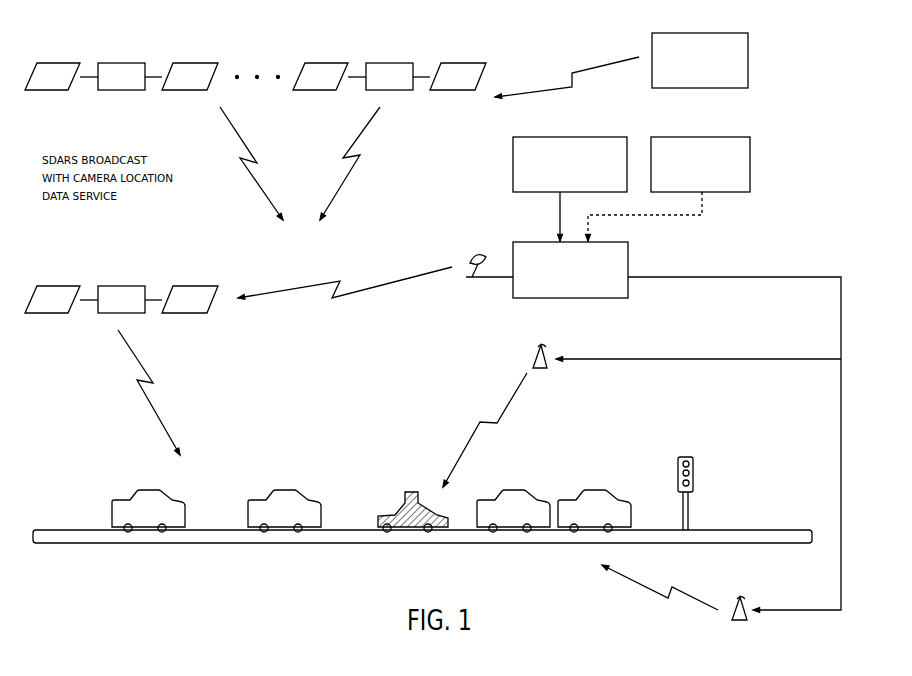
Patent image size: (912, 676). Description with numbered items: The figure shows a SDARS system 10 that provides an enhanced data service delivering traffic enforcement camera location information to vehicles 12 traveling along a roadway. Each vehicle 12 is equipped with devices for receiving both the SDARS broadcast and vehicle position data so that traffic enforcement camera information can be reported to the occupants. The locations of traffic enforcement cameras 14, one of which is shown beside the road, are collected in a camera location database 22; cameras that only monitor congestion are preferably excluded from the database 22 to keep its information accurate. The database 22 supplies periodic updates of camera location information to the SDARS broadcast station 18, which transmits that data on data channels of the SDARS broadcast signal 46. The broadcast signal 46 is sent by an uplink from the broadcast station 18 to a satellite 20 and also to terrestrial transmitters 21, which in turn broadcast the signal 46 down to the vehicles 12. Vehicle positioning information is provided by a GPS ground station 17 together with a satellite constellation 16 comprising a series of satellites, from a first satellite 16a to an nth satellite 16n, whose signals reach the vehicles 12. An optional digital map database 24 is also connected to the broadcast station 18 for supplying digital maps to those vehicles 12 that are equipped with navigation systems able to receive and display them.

The SDARS system 10 is at (123, 568).
The vehicle 12 is at (284, 502).
The traffic enforcement camera 14 is at (694, 472).
The satellite constellation 16 is at (322, 45).
The satellite 16a is at (185, 90).
The satellite 16n is at (393, 91).
The GPS ground station 17 is at (749, 59).
The SDARS broadcast station 18 is at (628, 262).
The satellite 20 is at (122, 285).
The terrestrial transmitter 21 is at (546, 348).
The camera location database 22 is at (572, 136).
The digital map database 24 is at (750, 160).
The SDARS broadcast signal 46 is at (380, 287).